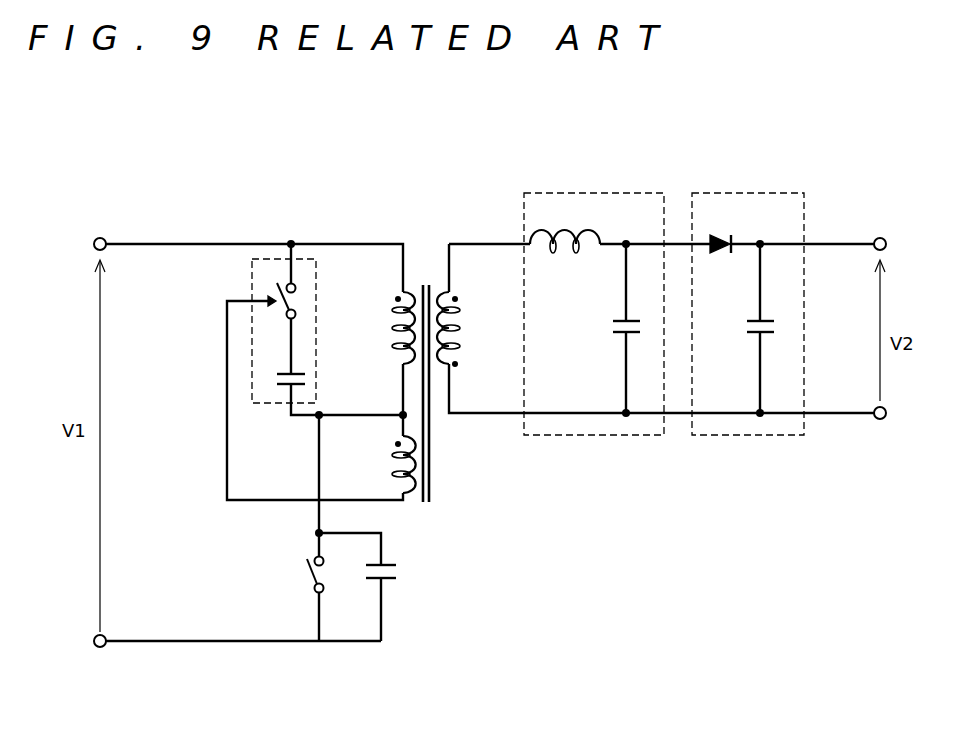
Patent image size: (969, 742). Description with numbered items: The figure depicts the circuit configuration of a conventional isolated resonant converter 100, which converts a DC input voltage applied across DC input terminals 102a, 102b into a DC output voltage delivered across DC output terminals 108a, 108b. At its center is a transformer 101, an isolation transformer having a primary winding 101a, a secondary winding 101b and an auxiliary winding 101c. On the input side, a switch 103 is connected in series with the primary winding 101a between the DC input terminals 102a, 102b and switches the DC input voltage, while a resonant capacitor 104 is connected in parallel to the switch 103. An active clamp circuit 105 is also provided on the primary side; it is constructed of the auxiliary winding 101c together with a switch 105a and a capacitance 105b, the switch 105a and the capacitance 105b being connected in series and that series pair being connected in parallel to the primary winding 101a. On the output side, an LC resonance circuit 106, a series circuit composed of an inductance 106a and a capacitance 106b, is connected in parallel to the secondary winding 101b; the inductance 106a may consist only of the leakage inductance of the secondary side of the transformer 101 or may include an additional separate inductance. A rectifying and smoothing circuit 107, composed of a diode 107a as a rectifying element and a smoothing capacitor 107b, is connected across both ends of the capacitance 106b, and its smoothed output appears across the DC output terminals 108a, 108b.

The isolated resonant converter 100 is at (467, 123).
The transformer 101 is at (421, 240).
The primary winding 101a is at (392, 321).
The secondary winding 101b is at (460, 321).
The auxiliary winding 101c is at (392, 472).
The DC input terminal 102a is at (100, 237).
The DC input terminal 102b is at (101, 648).
The switch 103 is at (308, 573).
The resonant capacitor 104 is at (398, 574).
The active clamp circuit 105 is at (318, 298).
The switch 105a is at (272, 290).
The capacitance 105b is at (277, 381).
The LC resonance circuit 106 is at (556, 190).
The inductance 106a is at (557, 238).
The capacitance 106b is at (613, 320).
The rectifying and smoothing circuit 107 is at (719, 190).
The diode 107a is at (718, 238).
The smoothing capacitor 107b is at (748, 320).
The DC output terminal 108a is at (880, 237).
The DC output terminal 108b is at (881, 420).